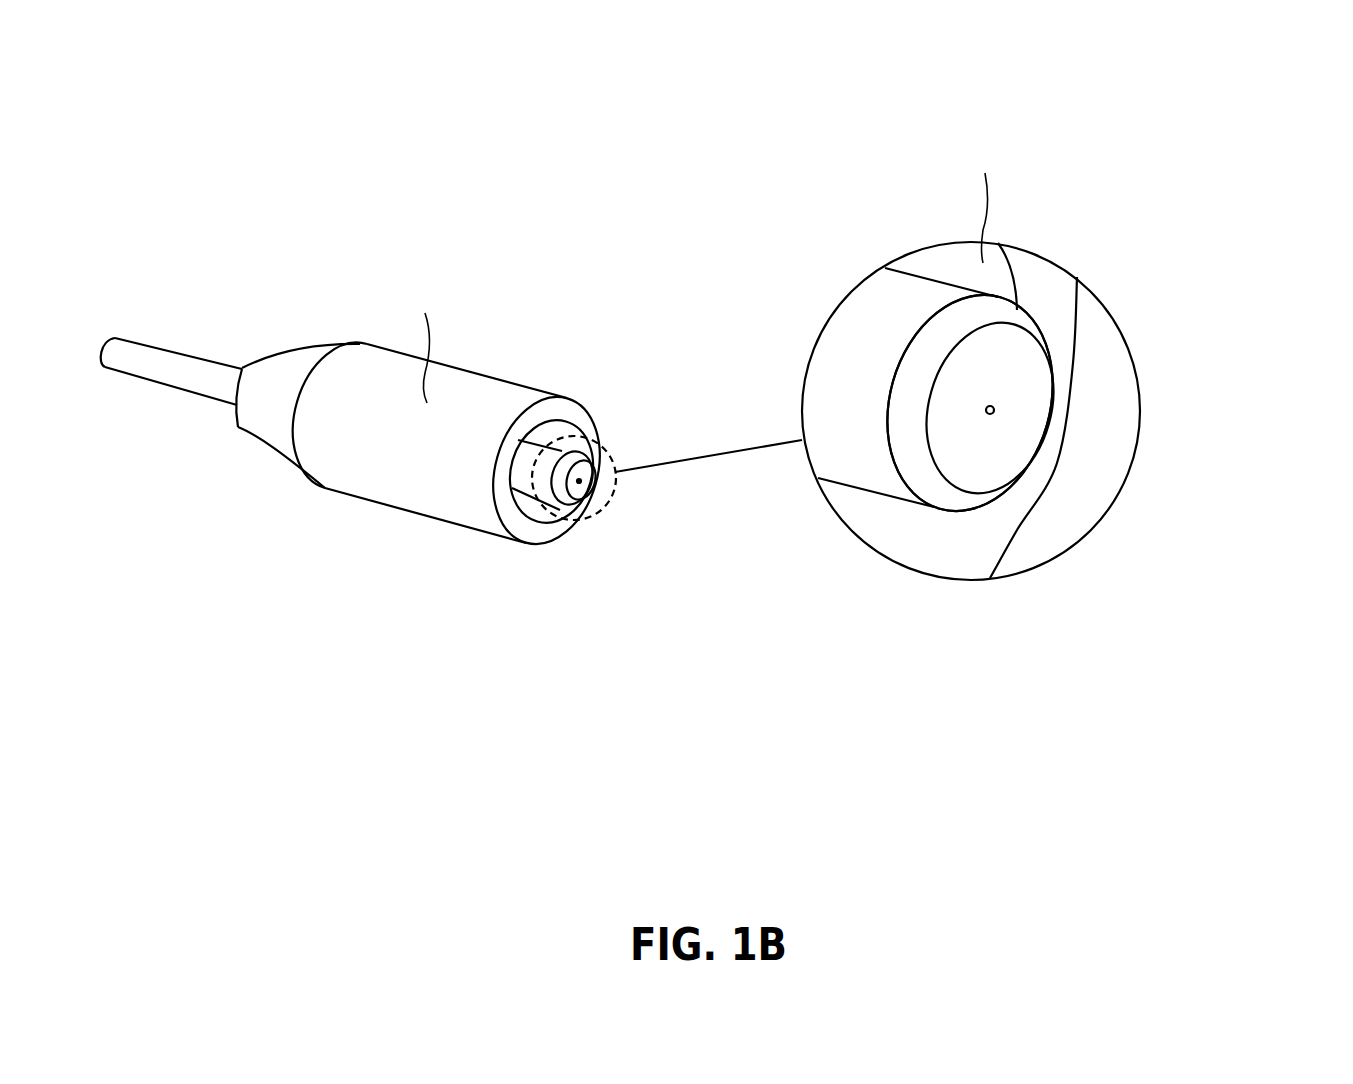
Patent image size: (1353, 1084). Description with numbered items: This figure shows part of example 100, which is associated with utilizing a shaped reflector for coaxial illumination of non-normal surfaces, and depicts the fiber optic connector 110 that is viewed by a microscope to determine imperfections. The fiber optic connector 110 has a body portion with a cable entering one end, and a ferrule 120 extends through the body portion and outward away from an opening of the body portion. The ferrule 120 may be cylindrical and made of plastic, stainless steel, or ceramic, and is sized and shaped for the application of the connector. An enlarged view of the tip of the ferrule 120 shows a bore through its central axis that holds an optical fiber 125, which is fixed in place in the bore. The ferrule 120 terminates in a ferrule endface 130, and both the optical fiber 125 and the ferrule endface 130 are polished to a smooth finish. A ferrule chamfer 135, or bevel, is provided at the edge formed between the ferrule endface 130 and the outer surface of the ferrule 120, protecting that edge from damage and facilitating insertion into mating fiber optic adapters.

The example 100 is at (193, 65).
The fiber optic connector 110 is at (442, 492).
The ferrule 120 is at (862, 297).
The optical fiber 125 is at (1003, 404).
The ferrule endface 130 is at (1022, 378).
The ferrule chamfer 135 is at (920, 483).